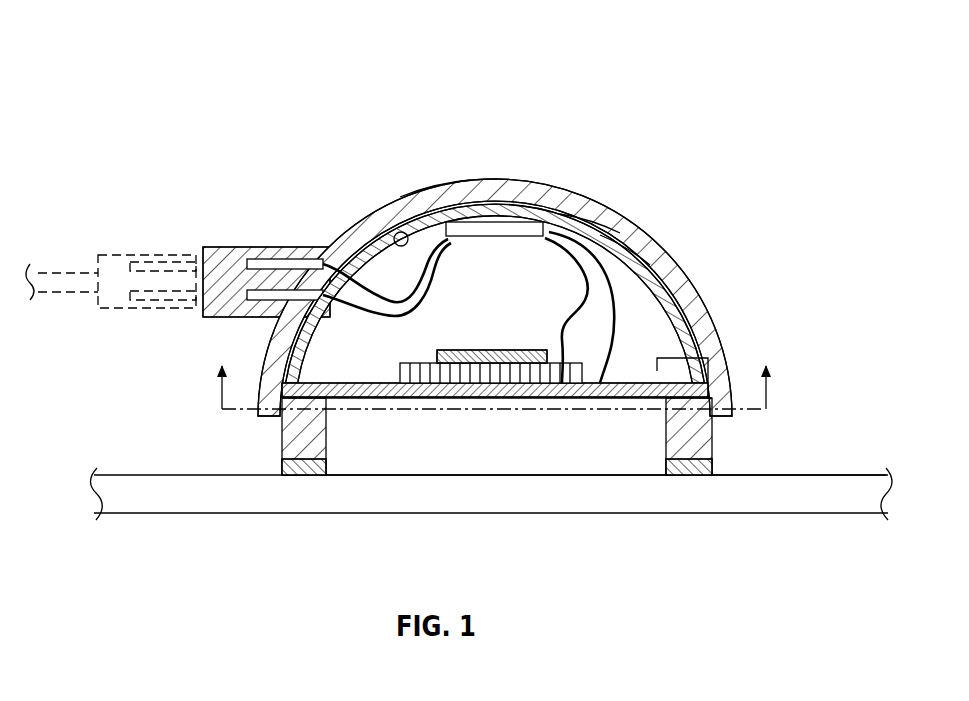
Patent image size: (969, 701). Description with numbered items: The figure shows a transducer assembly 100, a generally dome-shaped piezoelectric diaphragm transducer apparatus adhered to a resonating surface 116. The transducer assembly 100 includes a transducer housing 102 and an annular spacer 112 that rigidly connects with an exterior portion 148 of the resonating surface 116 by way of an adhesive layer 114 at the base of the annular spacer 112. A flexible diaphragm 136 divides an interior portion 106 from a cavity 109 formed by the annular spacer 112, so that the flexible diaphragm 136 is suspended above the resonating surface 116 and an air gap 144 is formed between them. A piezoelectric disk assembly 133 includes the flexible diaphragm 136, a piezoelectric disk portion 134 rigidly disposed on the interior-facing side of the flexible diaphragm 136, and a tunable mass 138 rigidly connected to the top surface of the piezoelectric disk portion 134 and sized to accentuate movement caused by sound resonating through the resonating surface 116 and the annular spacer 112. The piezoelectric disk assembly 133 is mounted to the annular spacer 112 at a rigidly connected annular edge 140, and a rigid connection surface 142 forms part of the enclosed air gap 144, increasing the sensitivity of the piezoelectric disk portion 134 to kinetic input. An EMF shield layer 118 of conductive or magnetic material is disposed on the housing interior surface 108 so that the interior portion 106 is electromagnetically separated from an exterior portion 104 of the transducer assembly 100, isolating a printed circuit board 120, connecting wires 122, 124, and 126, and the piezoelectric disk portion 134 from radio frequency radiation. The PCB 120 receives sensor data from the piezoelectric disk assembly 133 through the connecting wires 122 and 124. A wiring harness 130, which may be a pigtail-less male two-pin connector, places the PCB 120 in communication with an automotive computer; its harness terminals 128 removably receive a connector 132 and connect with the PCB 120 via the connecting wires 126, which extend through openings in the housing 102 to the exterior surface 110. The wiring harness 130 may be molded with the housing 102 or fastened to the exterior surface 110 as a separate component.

The transducer assembly 100 is at (109, 40).
The transducer housing 102 is at (383, 205).
The exterior portion 104 is at (495, 230).
The interior portion 106 is at (448, 290).
The housing interior surface 108 is at (402, 234).
The cavity 109 is at (645, 469).
The exterior surface 110 is at (433, 168).
The annular spacer 112 is at (283, 448).
The adhesive layer 114 is at (300, 478).
The resonating surface 116 is at (120, 514).
The EMF shield layer 118 is at (672, 282).
The printed circuit board 120 is at (512, 229).
The connecting wire 122 is at (587, 221).
The connecting wire 124 is at (622, 250).
The connecting wires 126 is at (446, 264).
The harness terminals 128 is at (287, 266).
The wiring harness 130 is at (230, 247).
The connector 132 is at (110, 310).
The piezoelectric disk assembly 133 is at (535, 338).
The piezoelectric disk portion 134 is at (410, 362).
The flexible diaphragm 136 is at (395, 383).
The tunable mass 138 is at (497, 350).
The rigidly connected annular edge 140 is at (686, 360).
The rigid connection surface 142 is at (328, 403).
The air gap 144 is at (436, 431).
The exterior portion of the resonating surface 148 is at (810, 467).